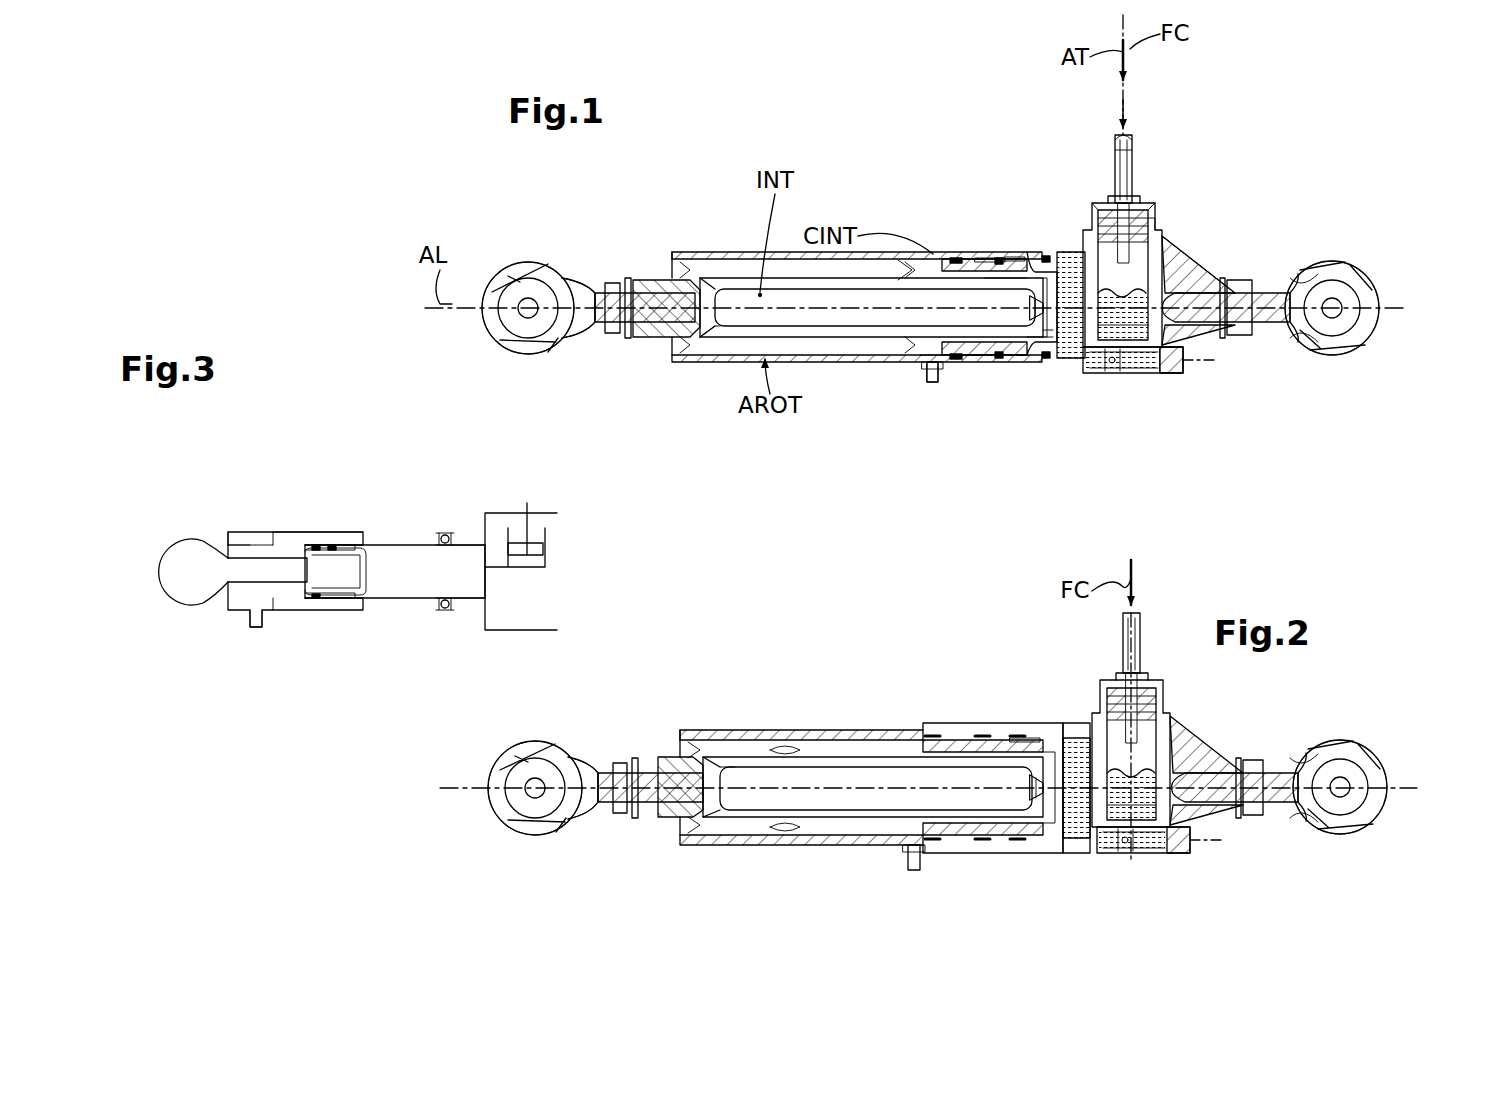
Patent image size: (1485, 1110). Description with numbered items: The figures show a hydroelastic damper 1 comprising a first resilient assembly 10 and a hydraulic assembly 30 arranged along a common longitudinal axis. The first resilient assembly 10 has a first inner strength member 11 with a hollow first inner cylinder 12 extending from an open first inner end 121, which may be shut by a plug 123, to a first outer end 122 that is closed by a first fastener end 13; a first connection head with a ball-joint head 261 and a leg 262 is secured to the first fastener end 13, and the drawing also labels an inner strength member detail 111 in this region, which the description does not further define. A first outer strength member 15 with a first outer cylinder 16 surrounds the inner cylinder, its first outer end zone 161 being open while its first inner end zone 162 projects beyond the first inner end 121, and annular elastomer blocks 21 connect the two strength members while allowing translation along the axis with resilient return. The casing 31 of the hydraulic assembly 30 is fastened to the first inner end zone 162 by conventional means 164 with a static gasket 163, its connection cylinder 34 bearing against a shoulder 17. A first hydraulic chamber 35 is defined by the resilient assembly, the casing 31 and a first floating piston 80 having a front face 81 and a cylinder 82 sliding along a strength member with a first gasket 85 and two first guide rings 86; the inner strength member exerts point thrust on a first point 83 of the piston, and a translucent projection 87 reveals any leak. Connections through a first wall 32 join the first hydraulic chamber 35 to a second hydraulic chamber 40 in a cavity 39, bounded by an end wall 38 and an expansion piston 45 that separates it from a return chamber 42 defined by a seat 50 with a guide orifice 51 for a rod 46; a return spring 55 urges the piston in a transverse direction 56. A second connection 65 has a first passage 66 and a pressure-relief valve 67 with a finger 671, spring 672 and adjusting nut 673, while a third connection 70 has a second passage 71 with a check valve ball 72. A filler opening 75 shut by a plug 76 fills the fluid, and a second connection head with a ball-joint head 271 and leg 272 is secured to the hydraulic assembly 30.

In FIG. 1, the hydroelastic damper 1 is at (763, 99).
In FIG. 2, the hydroelastic damper 1 is at (975, 646).
In FIG. 3, the hydroelastic damper 1 is at (150, 633).
In FIG. 1, the first resilient assembly 10 is at (862, 153).
In FIG. 3, the first resilient assembly 10 is at (300, 625).
In FIG. 1, the first inner strength member 11 is at (640, 340).
In FIG. 2, the first inner strength member 11 is at (675, 815).
In FIG. 1, the end piece shoulder 111 is at (658, 338).
In FIG. 1, the first inner cylinder 12 is at (740, 284).
In FIG. 2, the first inner cylinder 12 is at (862, 770).
In FIG. 1, the first inner end 121 is at (985, 261).
In FIG. 2, the first inner end 121 is at (1030, 744).
In FIG. 3, the first inner end 121 is at (480, 619).
In FIG. 1, the first outer end 122 is at (720, 335).
In FIG. 2, the first outer end 122 is at (745, 765).
In FIG. 3, the first outer end 122 is at (248, 539).
In FIG. 1, the plug 123 is at (1035, 305).
In FIG. 2, the plug 123 is at (1035, 784).
In FIG. 1, the first fastener end 13 is at (640, 289).
In FIG. 2, the first fastener end 13 is at (664, 765).
In FIG. 1, the first outer strength member 15 is at (740, 360).
In FIG. 2, the first outer strength member 15 is at (842, 845).
In FIG. 3, the first outer strength member 15 is at (270, 531).
In FIG. 1, the first outer cylinder 16 is at (925, 254).
In FIG. 2, the first outer cylinder 16 is at (925, 737).
In FIG. 3, the first outer cylinder 16 is at (300, 534).
In FIG. 1, the first outer end zone 161 is at (673, 255).
In FIG. 2, the first outer end zone 161 is at (683, 739).
In FIG. 3, the first outer end zone 161 is at (232, 539).
In FIG. 1, the first inner end zone 162 is at (1060, 241).
In FIG. 2, the first inner end zone 162 is at (1072, 734).
In FIG. 3, the first inner end zone 162 is at (355, 545).
In FIG. 1, the static gasket 163 is at (1045, 254).
In FIG. 3, the static gasket 163 is at (465, 545).
In FIG. 1, the conventional means 164 is at (1025, 261).
In FIG. 3, the conventional means 164 is at (445, 535).
In FIG. 1, the shoulder 17 is at (1065, 363).
In FIG. 2, the first block 21 is at (730, 735).
In FIG. 1, the ball-joint head 261 is at (520, 266).
In FIG. 2, the ball-joint head 261 is at (535, 832).
In FIG. 1, the leg 262 is at (580, 288).
In FIG. 2, the leg 262 is at (602, 805).
In FIG. 1, the ball-joint head 271 is at (1355, 288).
In FIG. 2, the ball-joint head 271 is at (1348, 754).
In FIG. 1, the leg 272 is at (1285, 298).
In FIG. 2, the leg 272 is at (1274, 774).
In FIG. 1, the hydraulic assembly 30 is at (1225, 133).
In FIG. 1, the casing 31 is at (1237, 306).
In FIG. 1, the first wall 32 is at (1015, 261).
In FIG. 1, the connection cylinder 34 is at (1100, 209).
In FIG. 1, the first hydraulic chamber 35 is at (1073, 284).
In FIG. 3, the first hydraulic chamber 35 is at (395, 571).
In FIG. 1, the end wall 38 is at (1110, 372).
In FIG. 1, the cavity 39 is at (1198, 272).
In FIG. 1, the second hydraulic chamber 40 is at (1245, 332).
In FIG. 3, the second hydraulic chamber 40 is at (530, 564).
In FIG. 1, the return chamber 42 is at (1165, 255).
In FIG. 1, the expansion piston 45 is at (1163, 273).
In FIG. 3, the expansion piston 45 is at (543, 546).
In FIG. 1, the rod 46 is at (1140, 171).
In FIG. 1, the seat 50 is at (1148, 226).
In FIG. 1, the guide orifice 51 is at (1130, 191).
In FIG. 1, the return spring 55 is at (1115, 156).
In FIG. 1, the transverse direction 56 is at (1135, 159).
In FIG. 1, the second connection 65 is at (1070, 368).
In FIG. 1, the first passage 66 is at (1080, 370).
In FIG. 1, the pressure-relief valve 67 is at (1122, 375).
In FIG. 1, the finger 671 is at (1093, 370).
In FIG. 1, the spring 672 is at (1098, 370).
In FIG. 1, the nut 673 is at (1138, 373).
In FIG. 1, the third connection 70 is at (1150, 204).
In FIG. 1, the second passage 71 is at (1190, 360).
In FIG. 1, the movable ball 72 is at (1123, 294).
In FIG. 1, the filler opening 75 is at (1160, 372).
In FIG. 1, the plug 76 is at (1182, 372).
In FIG. 1, the first floating piston 80 is at (905, 264).
In FIG. 1, the front face 81 is at (1015, 350).
In FIG. 1, the cylinder 82 is at (923, 355).
In FIG. 1, the first point 83 is at (1050, 338).
In FIG. 1, the first gasket 85 is at (1000, 279).
In FIG. 3, the first gasket 85 is at (340, 544).
In FIG. 1, the first guide rings 86 is at (955, 257).
In FIG. 3, the first guide rings 86 is at (318, 544).
In FIG. 1, the translucent projection 87 is at (935, 370).
In FIG. 3, the translucent projection 87 is at (248, 617).